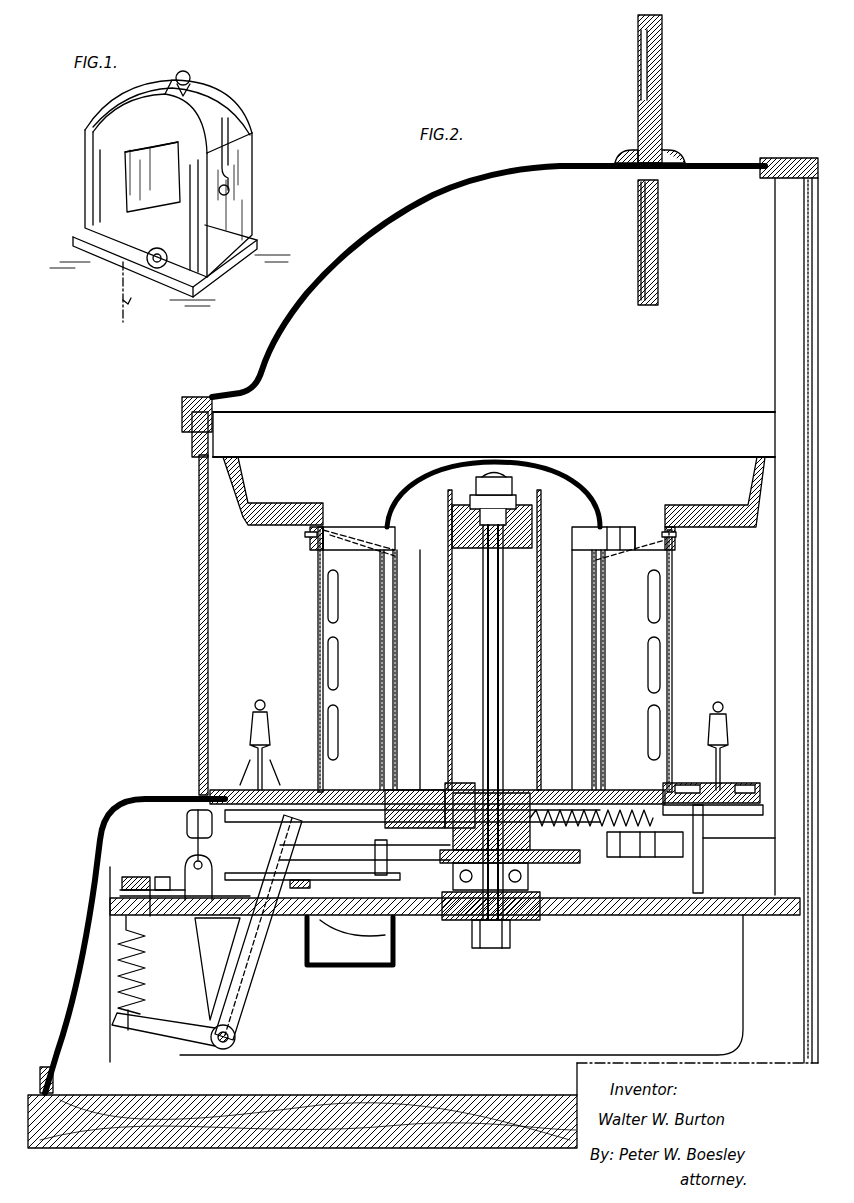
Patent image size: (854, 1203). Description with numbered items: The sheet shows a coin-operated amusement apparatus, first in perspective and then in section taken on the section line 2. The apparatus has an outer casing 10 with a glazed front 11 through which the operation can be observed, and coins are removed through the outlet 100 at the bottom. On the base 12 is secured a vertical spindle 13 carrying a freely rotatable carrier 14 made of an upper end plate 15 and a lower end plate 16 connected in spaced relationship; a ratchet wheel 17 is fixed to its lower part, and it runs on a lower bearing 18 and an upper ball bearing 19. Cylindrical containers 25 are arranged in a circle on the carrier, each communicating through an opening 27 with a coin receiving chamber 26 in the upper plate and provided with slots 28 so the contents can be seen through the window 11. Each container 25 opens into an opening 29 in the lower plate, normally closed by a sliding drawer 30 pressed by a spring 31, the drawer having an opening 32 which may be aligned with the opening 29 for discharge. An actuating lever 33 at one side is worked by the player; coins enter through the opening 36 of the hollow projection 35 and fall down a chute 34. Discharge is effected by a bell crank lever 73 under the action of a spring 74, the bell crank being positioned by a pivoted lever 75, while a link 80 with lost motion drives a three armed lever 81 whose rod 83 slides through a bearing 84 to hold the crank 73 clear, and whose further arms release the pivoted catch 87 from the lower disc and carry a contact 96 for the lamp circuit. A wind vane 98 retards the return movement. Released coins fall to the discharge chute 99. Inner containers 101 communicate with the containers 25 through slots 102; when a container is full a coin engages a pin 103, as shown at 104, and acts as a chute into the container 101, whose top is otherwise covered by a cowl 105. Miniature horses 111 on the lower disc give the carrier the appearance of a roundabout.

In FIG. 1, the section line 2 is at (186, 72).
In FIG. 1, the outer casing 10 is at (222, 96).
In FIG. 2, the outer casing 10 is at (378, 210).
In FIG. 1, the glazed front 11 is at (150, 163).
In FIG. 2, the base 12 is at (570, 918).
In FIG. 2, the vertical spindle 13 is at (500, 722).
In FIG. 2, the carrier 14 is at (246, 522).
In FIG. 2, the upper end plate 15 is at (712, 500).
In FIG. 2, the lower end plate 16 is at (462, 790).
In FIG. 2, the ratchet wheel 17 is at (575, 863).
In FIG. 2, the lower bearing 18 is at (530, 880).
In FIG. 2, the upper ball bearing 19 is at (514, 540).
In FIG. 2, the container 25 is at (493, 659).
In FIG. 2, the coin receiving chamber 26 is at (368, 510).
In FIG. 2, the opening 27 is at (620, 515).
In FIG. 2, the holes or slots 28 is at (332, 660).
In FIG. 2, the opening 29 is at (362, 800).
In FIG. 2, the sliding plate or drawer 30 is at (405, 800).
In FIG. 2, the spring 31 is at (591, 826).
In FIG. 2, the opening 32 is at (336, 810).
In FIG. 1, the actuating lever 33 is at (231, 150).
In FIG. 2, the chute 34 is at (640, 237).
In FIG. 2, the hollow projection 35 is at (660, 140).
In FIG. 2, the opening 36 is at (640, 72).
In FIG. 2, the bell crank lever 73 is at (240, 990).
In FIG. 2, the spring 74 is at (140, 960).
In FIG. 2, the pivoted lever 75 is at (312, 885).
In FIG. 2, the link 80 is at (145, 876).
In FIG. 2, the three armed lever 81 is at (160, 892).
In FIG. 2, the rod 83 is at (192, 860).
In FIG. 2, the bearing 84 is at (194, 880).
In FIG. 2, the pivoted catch 87 is at (352, 880).
In FIG. 2, the contact 96 is at (750, 845).
In FIG. 2, the wind vane 98 is at (190, 828).
In FIG. 1, the discharge chute 99 is at (154, 268).
In FIG. 2, the discharge chute 99 is at (365, 960).
In FIG. 1, the outlet 100 is at (170, 247).
In FIG. 2, the container 101 is at (438, 626).
In FIG. 2, the slot 102 is at (402, 540).
In FIG. 2, the pin 103 is at (312, 540).
In FIG. 2, the coin acting as chute 104 is at (358, 545).
In FIG. 2, the cowl or cover 105 is at (458, 460).
In FIG. 2, the miniature horses 111 is at (252, 740).